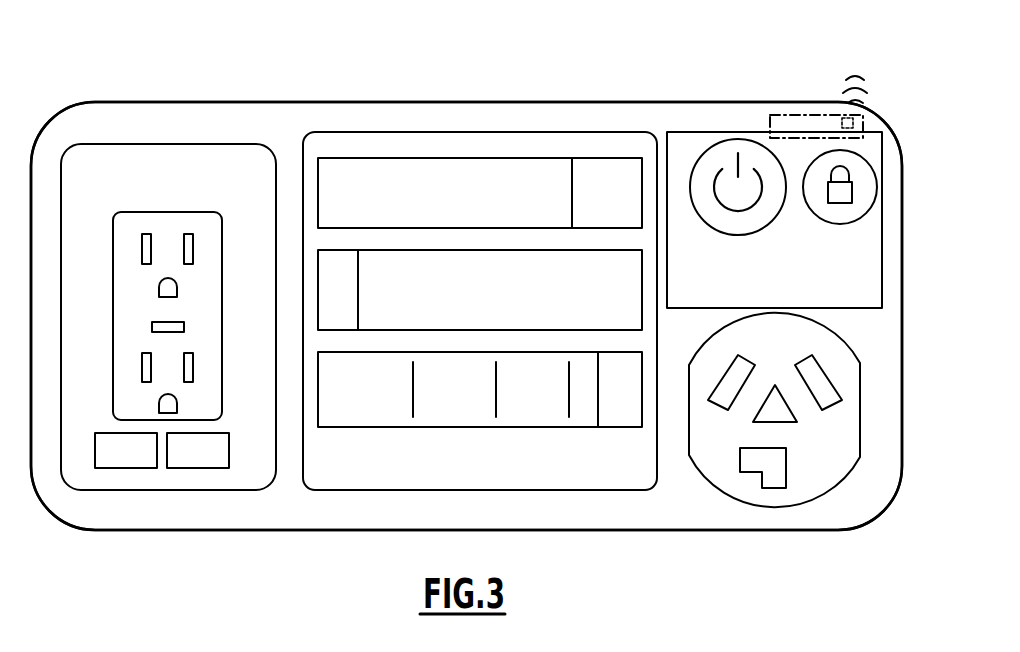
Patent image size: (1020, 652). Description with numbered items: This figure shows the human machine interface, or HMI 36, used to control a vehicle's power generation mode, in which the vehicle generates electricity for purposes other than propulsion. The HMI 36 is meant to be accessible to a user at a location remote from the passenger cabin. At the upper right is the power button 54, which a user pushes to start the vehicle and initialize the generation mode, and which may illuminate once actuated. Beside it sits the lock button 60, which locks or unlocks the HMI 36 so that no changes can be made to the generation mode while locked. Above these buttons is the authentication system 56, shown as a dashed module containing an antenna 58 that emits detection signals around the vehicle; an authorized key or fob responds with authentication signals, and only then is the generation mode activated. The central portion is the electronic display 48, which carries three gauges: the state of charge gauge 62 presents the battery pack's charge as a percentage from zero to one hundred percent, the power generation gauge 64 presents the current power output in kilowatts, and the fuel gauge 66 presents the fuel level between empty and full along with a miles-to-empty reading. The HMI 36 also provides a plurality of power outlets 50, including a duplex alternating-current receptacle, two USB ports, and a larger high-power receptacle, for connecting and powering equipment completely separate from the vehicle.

The HMI 36 is at (616, 76).
The electronic display 48 is at (421, 105).
The power outlets 50 is at (164, 188).
The power button 54 is at (694, 146).
The authentication system 56 is at (787, 114).
The antenna 58 is at (855, 122).
The lock button 60 is at (874, 218).
The state of charge gauge 62 is at (492, 150).
The power generation gauge 64 is at (305, 330).
The fuel gauge 66 is at (342, 460).